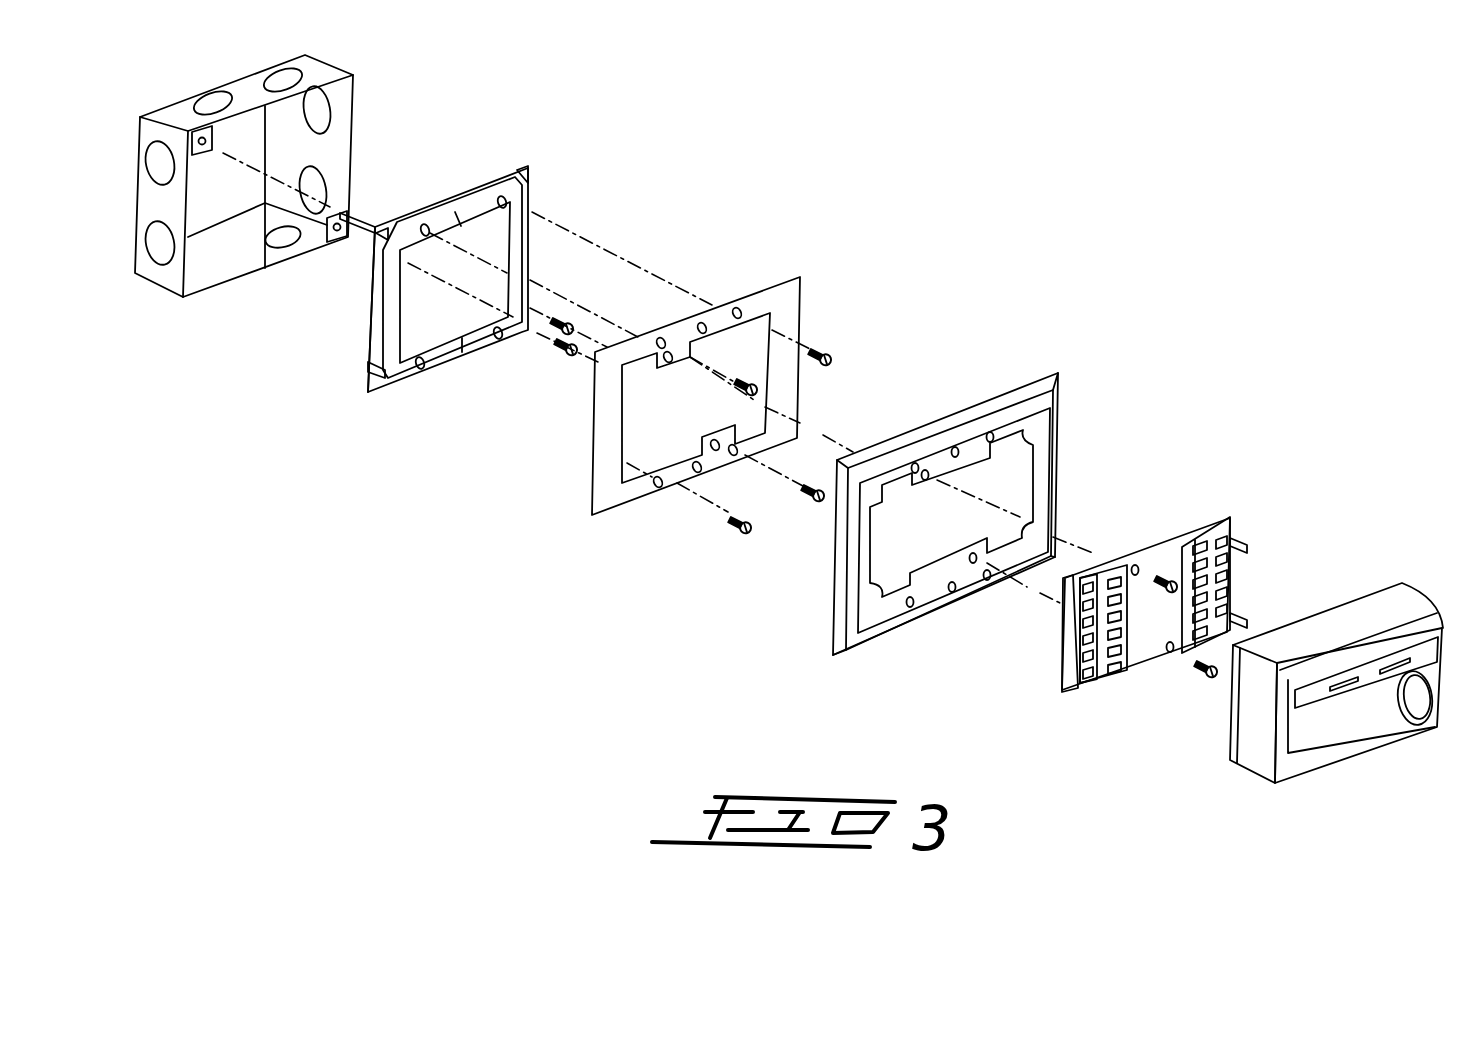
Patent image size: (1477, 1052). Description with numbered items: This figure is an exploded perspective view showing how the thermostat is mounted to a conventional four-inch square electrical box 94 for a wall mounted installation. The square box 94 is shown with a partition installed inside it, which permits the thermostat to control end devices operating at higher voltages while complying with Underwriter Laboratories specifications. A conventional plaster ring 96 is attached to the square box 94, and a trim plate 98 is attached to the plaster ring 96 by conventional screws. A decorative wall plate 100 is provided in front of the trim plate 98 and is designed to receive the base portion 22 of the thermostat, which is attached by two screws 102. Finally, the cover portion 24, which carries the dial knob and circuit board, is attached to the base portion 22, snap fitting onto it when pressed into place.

The terminal base / subbase 22 is at (1217, 521).
The thermostat cover 24 is at (1415, 591).
The electrical junction box 94 is at (233, 183).
The mud ring / plaster ring 96 is at (450, 200).
The mounting plate 98 is at (781, 281).
The wall plate 100 is at (1024, 381).
The mounting screws 102 is at (1175, 595).